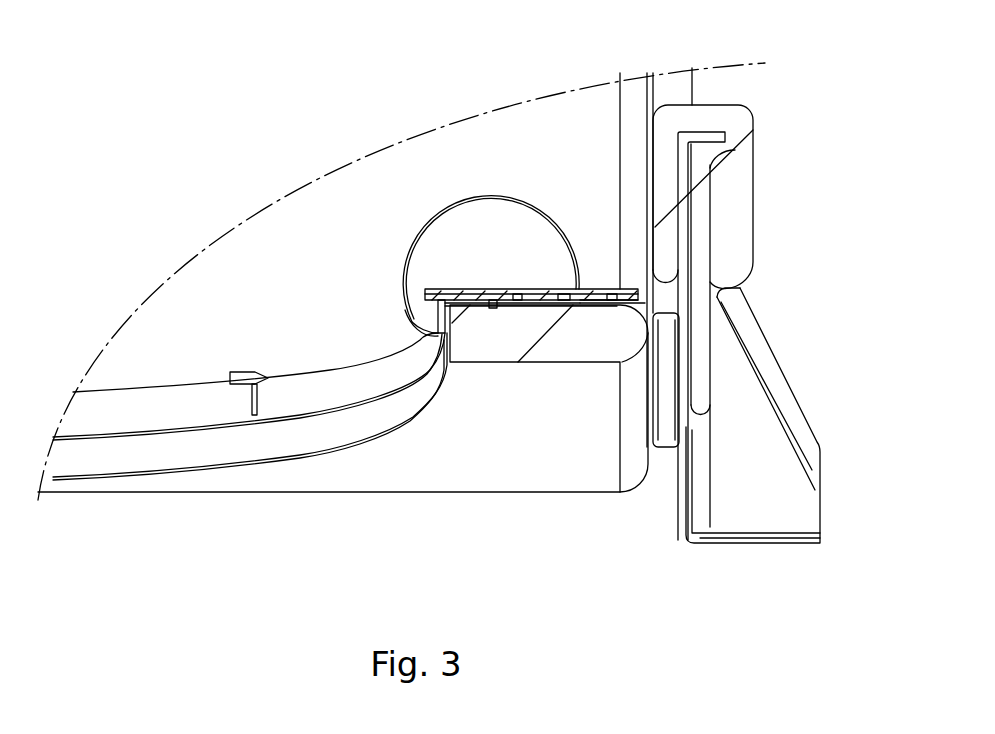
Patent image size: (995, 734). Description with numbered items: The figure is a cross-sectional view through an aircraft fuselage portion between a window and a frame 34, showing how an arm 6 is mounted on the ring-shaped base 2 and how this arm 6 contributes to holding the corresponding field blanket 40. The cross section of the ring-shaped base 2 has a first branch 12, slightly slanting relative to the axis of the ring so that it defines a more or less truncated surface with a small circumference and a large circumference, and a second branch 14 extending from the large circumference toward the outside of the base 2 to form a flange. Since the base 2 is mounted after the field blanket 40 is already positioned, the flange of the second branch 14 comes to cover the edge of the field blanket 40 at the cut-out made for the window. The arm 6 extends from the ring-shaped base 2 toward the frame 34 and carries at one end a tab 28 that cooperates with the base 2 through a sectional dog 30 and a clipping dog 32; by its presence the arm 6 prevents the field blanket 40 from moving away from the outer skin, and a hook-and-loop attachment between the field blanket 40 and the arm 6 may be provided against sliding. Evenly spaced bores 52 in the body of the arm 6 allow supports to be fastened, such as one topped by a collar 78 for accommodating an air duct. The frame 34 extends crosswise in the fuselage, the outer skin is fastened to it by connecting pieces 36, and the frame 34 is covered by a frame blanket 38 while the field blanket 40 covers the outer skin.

The ring-shaped base 2 is at (328, 378).
The arm 6 is at (595, 289).
The first branch 12 is at (420, 332).
The second branch 14 is at (453, 288).
The tab 28 is at (249, 372).
The sectional dog 30 is at (407, 295).
The clipping dog 32 is at (493, 305).
The frame 34 is at (688, 258).
The connecting piece 36 is at (800, 513).
The frame blanket 38 is at (708, 113).
The field blanket 40 is at (549, 350).
The bore 52 is at (519, 289).
The collar 78 is at (494, 197).